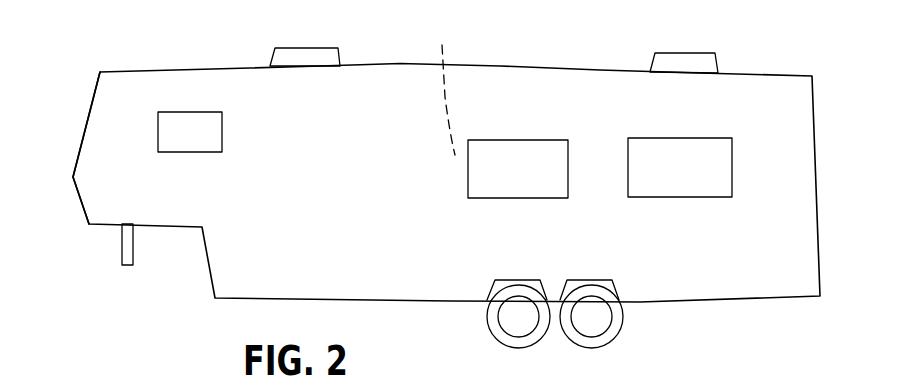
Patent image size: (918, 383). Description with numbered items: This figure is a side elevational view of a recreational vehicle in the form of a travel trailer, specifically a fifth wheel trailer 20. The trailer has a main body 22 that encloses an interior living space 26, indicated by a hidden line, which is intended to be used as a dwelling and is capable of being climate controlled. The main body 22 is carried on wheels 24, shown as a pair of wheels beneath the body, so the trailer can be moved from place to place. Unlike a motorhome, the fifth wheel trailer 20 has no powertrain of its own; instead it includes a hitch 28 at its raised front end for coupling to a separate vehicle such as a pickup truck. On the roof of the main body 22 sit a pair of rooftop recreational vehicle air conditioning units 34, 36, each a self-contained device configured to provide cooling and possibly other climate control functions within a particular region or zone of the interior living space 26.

The fifth wheel trailer 20 is at (70, 104).
The main body 22 is at (92, 202).
The wheels 24 is at (497, 326).
The interior living space 26 is at (444, 87).
The hitch 28 is at (118, 265).
The rooftop recreational vehicle air conditioning unit 34 is at (299, 58).
The rooftop recreational vehicle air conditioning unit 36 is at (703, 68).